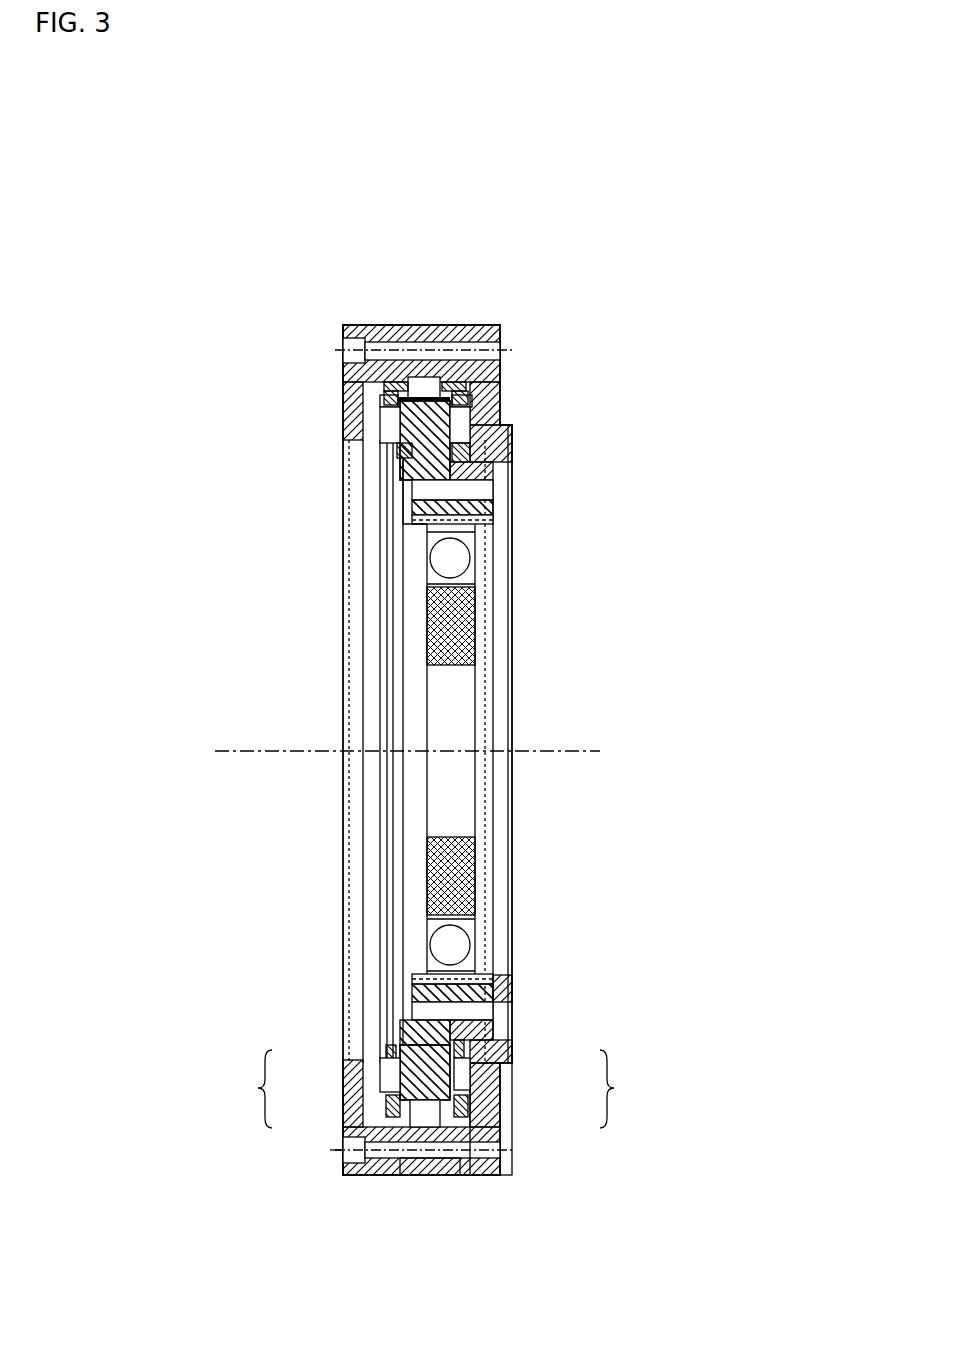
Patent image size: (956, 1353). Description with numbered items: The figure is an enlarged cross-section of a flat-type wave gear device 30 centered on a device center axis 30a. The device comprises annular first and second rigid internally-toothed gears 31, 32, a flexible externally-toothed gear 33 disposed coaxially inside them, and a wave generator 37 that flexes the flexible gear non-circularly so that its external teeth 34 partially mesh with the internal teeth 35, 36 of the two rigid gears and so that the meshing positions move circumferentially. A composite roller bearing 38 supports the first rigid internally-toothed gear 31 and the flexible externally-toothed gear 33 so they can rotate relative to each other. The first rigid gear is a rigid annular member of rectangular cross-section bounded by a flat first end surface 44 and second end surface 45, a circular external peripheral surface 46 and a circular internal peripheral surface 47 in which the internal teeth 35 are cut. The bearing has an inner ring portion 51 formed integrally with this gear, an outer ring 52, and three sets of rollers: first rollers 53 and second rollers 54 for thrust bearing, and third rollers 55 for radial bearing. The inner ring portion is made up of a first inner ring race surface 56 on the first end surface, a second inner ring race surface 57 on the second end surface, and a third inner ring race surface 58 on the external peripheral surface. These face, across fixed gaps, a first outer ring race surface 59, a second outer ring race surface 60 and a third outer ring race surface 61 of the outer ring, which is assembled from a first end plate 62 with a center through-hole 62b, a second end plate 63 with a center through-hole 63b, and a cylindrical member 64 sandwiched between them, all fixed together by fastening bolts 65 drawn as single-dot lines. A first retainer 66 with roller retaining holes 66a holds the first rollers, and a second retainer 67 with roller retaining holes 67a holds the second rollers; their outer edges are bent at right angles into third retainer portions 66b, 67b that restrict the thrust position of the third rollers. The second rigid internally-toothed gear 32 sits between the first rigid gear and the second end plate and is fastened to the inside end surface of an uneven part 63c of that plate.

The wave gear device 30 is at (570, 280).
The device center axis 30a is at (245, 752).
The first rigid internally-toothed gear 31 is at (448, 432).
The second rigid internally-toothed gear 32 is at (490, 472).
The flexible externally-toothed gear 33 is at (480, 545).
The external teeth 34 is at (440, 497).
The internal teeth 35 is at (420, 540).
The internal teeth 36 is at (490, 533).
The wave generator 37 is at (470, 625).
The composite roller bearing 38 is at (343, 403).
The first end surface 44 is at (400, 455).
The second end surface 45 is at (470, 462).
The circular external peripheral surface 46 is at (440, 400).
The circular internal peripheral surface 47 is at (420, 528).
The inner ring portion 51 is at (252, 1089).
The outer ring 52 is at (622, 1089).
The first rollers 53 is at (385, 425).
The second rollers 54 is at (465, 425).
The third rollers 55 is at (433, 395).
The first inner ring race surface 56 is at (395, 1075).
The second inner ring race surface 57 is at (420, 1063).
The third inner ring race surface 58 is at (412, 1118).
The first outer ring race surface 59 is at (470, 1088).
The second outer ring race surface 60 is at (470, 1072).
The third outer ring race surface 61 is at (442, 1115).
The first end plate 62 is at (360, 1175).
The center through-hole 62b is at (380, 1000).
The second end plate 63 is at (492, 1175).
The center through-hole 63b is at (500, 960).
The uneven part 63c is at (508, 990).
The cylindrical member 64 is at (430, 1175).
The fastening bolts 65 is at (340, 1152).
The first retainer 66 is at (386, 393).
The roller retaining holes 66a is at (382, 402).
The third retainer portion 66b is at (405, 385).
The second retainer 67 is at (468, 392).
The roller retaining holes 67a is at (470, 402).
The third retainer portion 67b is at (447, 392).